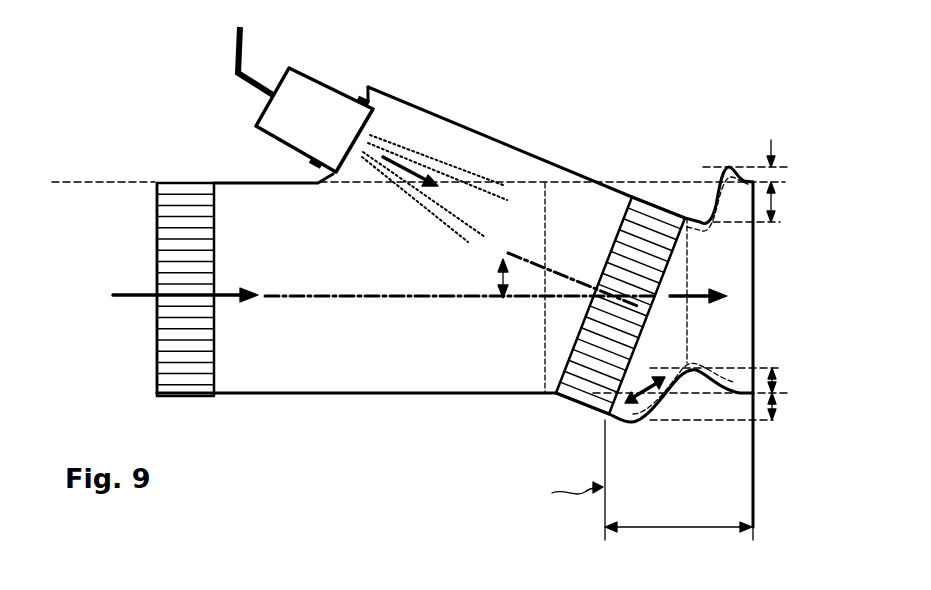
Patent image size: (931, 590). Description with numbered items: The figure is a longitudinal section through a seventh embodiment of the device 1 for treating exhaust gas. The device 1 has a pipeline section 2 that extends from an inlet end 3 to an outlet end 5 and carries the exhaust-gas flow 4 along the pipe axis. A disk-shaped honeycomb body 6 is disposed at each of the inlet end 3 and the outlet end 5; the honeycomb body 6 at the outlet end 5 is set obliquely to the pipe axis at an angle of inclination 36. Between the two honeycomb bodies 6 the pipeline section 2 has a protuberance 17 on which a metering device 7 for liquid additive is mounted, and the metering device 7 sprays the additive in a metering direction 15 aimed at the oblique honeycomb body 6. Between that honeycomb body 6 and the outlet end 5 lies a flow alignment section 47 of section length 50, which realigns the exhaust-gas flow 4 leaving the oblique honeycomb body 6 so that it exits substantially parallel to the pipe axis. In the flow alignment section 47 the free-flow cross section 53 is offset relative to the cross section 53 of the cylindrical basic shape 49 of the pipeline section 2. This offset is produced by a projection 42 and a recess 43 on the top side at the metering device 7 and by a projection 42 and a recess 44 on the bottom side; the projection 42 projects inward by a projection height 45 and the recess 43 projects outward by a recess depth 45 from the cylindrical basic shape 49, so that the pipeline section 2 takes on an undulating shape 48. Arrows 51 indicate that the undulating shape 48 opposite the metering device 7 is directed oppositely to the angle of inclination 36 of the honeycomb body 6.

The device 1 is at (100, 60).
The pipeline section 2 is at (381, 396).
The inlet end 3 is at (155, 400).
The exhaust-gas flow 4 is at (130, 293).
The outlet end 5 is at (755, 298).
The honeycomb body 6 is at (192, 205).
The metering device 7 is at (312, 78).
The metering direction 15 is at (412, 173).
The protuberance 17 is at (460, 125).
The angle of inclination 36 is at (500, 280).
The projection 42 is at (695, 212).
The recess 43 is at (728, 167).
The recess 44 is at (773, 202).
The projection height 45 is at (773, 174).
The flow alignment section 47 is at (557, 500).
The undulating shape 48 is at (745, 228).
The cylindrical basic shape 49 is at (625, 192).
The section length 50 is at (690, 527).
The arrows 51 is at (603, 420).
The cross section 53 is at (697, 214).